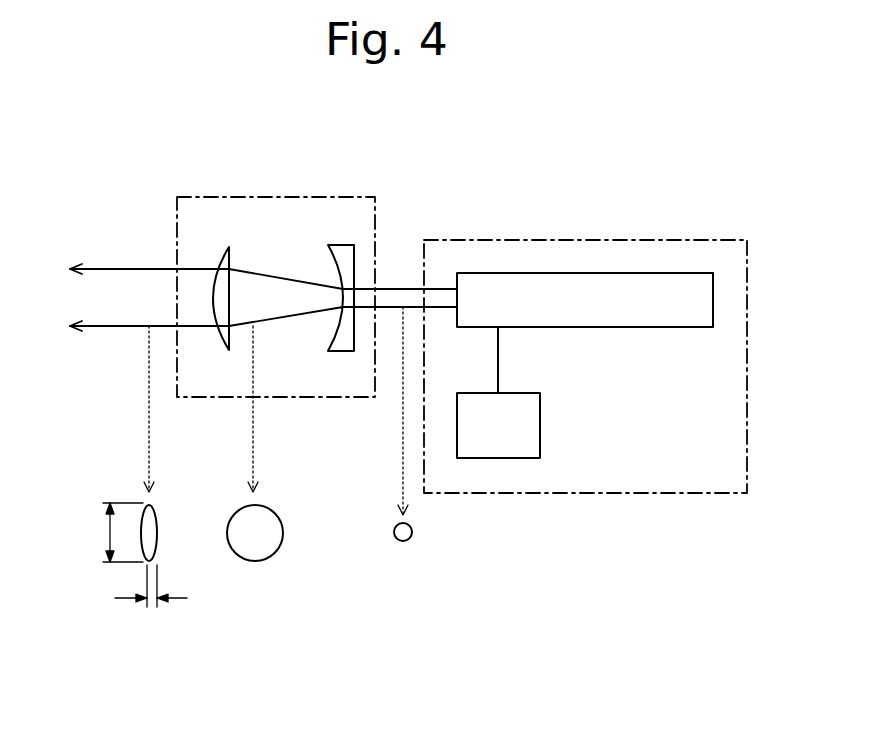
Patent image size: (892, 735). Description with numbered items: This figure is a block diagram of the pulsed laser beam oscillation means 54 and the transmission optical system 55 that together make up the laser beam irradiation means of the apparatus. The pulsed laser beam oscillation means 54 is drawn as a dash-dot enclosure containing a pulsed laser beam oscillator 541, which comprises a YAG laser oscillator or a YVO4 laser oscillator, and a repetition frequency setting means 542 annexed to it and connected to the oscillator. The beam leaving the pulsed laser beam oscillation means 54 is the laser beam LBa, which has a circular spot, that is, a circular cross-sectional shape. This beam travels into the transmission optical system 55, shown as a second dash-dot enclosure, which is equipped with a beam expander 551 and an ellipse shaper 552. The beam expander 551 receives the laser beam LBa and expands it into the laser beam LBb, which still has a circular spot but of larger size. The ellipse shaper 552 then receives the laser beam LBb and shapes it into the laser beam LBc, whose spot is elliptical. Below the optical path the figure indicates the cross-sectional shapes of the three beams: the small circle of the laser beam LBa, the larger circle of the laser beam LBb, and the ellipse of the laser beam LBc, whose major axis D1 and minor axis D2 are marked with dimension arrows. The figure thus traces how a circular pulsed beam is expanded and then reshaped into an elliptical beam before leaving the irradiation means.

The pulsed laser beam oscillation means 54 is at (646, 239).
The pulsed laser beam oscillator 541 is at (677, 330).
The repetition frequency setting means 542 is at (540, 430).
The transmission optical system 55 is at (296, 196).
The beam expander 551 is at (345, 250).
The ellipse shaper 552 is at (217, 262).
The laser beam LBa is at (410, 540).
The laser beam LBb is at (275, 553).
The laser beam LBc is at (157, 540).
The major axis D1 is at (110, 532).
The minor axis D2 is at (151, 606).